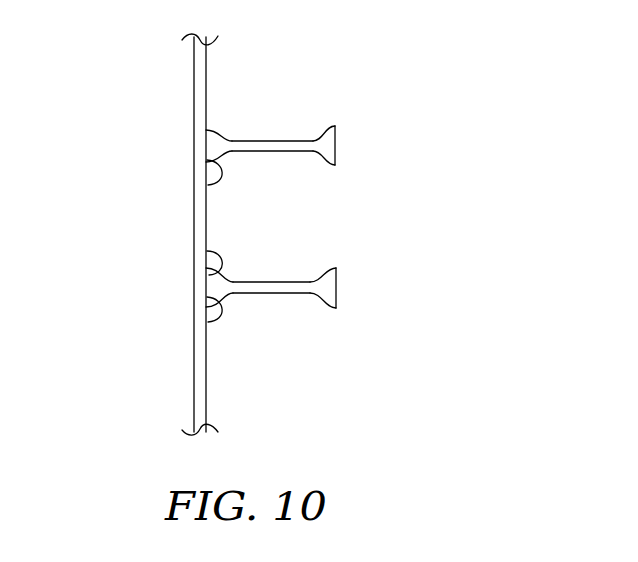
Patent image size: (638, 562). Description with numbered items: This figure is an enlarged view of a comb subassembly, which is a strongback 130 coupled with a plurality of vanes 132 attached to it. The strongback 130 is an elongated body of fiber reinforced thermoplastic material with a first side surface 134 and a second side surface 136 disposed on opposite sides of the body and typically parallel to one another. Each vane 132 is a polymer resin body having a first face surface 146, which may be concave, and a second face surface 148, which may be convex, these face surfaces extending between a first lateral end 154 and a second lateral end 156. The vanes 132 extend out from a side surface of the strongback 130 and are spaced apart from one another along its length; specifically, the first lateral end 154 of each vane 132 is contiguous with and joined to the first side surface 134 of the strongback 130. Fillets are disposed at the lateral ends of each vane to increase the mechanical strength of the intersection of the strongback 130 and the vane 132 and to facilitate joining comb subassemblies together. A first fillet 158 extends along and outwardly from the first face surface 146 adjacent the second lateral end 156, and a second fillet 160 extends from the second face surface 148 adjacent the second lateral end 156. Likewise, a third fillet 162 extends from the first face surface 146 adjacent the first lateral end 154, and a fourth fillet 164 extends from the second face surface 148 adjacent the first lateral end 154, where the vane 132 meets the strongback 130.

The strongback 130 is at (199, 234).
The vane 132 is at (276, 203).
The first side surface 134 is at (207, 397).
The second side surface 136 is at (193, 392).
The first face surface 146 is at (272, 152).
The second face surface 148 is at (283, 141).
The first lateral end 154 is at (207, 148).
The second lateral end 156 is at (336, 146).
The first fillet 158 is at (330, 162).
The second fillet 160 is at (330, 129).
The third fillet 162 is at (207, 185).
The fourth fillet 164 is at (223, 133).